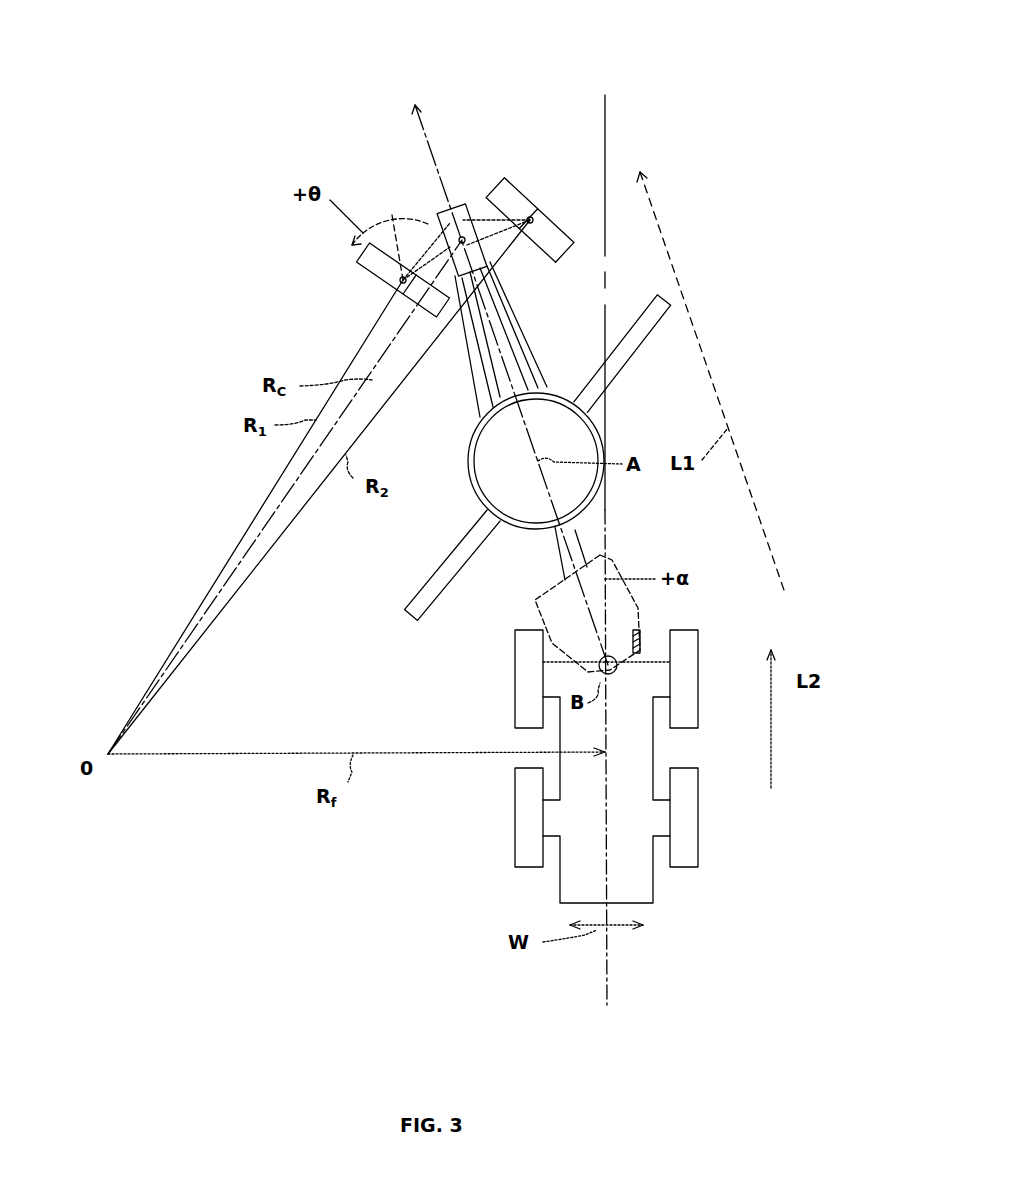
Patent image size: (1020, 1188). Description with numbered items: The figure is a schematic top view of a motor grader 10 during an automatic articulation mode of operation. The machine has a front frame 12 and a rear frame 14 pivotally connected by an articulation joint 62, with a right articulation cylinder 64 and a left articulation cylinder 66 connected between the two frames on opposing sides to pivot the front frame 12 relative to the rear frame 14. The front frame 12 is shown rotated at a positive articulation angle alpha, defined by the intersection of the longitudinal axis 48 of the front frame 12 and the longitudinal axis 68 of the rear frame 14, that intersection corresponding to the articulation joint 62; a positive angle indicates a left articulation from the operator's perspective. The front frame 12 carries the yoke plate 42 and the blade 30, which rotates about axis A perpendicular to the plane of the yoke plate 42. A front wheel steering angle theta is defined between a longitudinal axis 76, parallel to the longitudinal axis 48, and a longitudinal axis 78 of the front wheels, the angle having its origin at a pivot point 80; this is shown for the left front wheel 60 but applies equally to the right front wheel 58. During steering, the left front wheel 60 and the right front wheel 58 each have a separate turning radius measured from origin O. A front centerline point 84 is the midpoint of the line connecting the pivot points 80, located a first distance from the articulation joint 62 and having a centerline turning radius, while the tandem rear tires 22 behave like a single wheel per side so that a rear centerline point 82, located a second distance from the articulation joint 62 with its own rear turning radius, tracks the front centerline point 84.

The motor grader 10 is at (735, 62).
The front frame 12 is at (518, 330).
The rear frame 14 is at (560, 878).
The rear tires 22 is at (515, 703).
The blade 30 is at (404, 608).
The yoke plate 42 is at (467, 460).
The longitudinal axis of the front frame 48 is at (430, 141).
The right front wheel 58 is at (520, 192).
The left front wheel 60 is at (367, 282).
The articulation joint 62 is at (617, 673).
The right articulation cylinder 64 is at (640, 650).
The left articulation cylinder 66 is at (535, 600).
The longitudinal axis of the rear frame 68 is at (608, 107).
The longitudinal axis parallel to front frame axis 76 is at (381, 200).
The longitudinal axis of the front wheels 78 is at (338, 240).
The pivot point 80 is at (395, 295).
The rear centerline point 82 is at (608, 762).
The front centerline point 84 is at (467, 310).